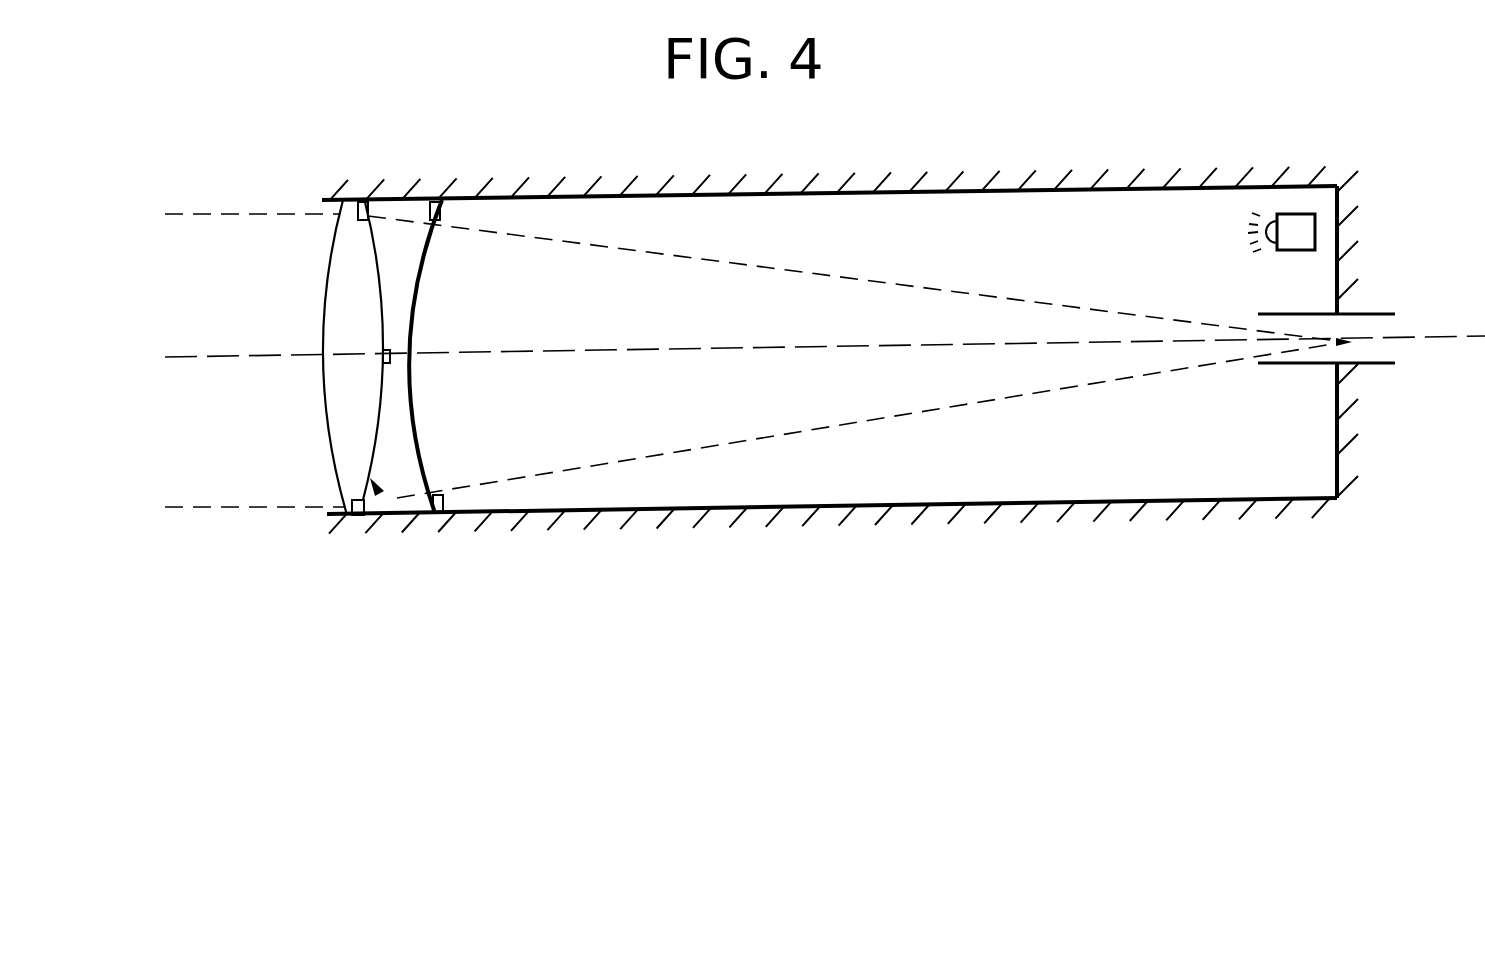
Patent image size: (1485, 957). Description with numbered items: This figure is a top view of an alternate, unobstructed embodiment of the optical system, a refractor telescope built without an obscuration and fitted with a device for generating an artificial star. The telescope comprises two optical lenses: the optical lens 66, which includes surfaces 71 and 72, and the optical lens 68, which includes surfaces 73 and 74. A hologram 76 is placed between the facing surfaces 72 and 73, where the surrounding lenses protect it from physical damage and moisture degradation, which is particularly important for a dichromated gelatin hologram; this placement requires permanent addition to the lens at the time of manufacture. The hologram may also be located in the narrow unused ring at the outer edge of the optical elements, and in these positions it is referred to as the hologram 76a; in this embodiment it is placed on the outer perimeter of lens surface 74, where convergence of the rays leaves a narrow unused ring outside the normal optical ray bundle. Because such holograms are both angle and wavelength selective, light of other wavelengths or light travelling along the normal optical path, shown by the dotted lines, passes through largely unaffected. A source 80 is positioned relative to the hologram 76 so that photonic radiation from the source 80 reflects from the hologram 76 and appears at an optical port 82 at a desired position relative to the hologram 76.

The optical lens 66 is at (329, 357).
The optical lens 68 is at (398, 385).
The surface 71 is at (323, 390).
The surface 72 is at (360, 468).
The surface 73 is at (372, 482).
The surface 74 is at (420, 443).
The hologram 76 is at (389, 349).
The hologram 76a is at (447, 200).
The source 80 is at (1300, 252).
The optical port 82 is at (1380, 315).